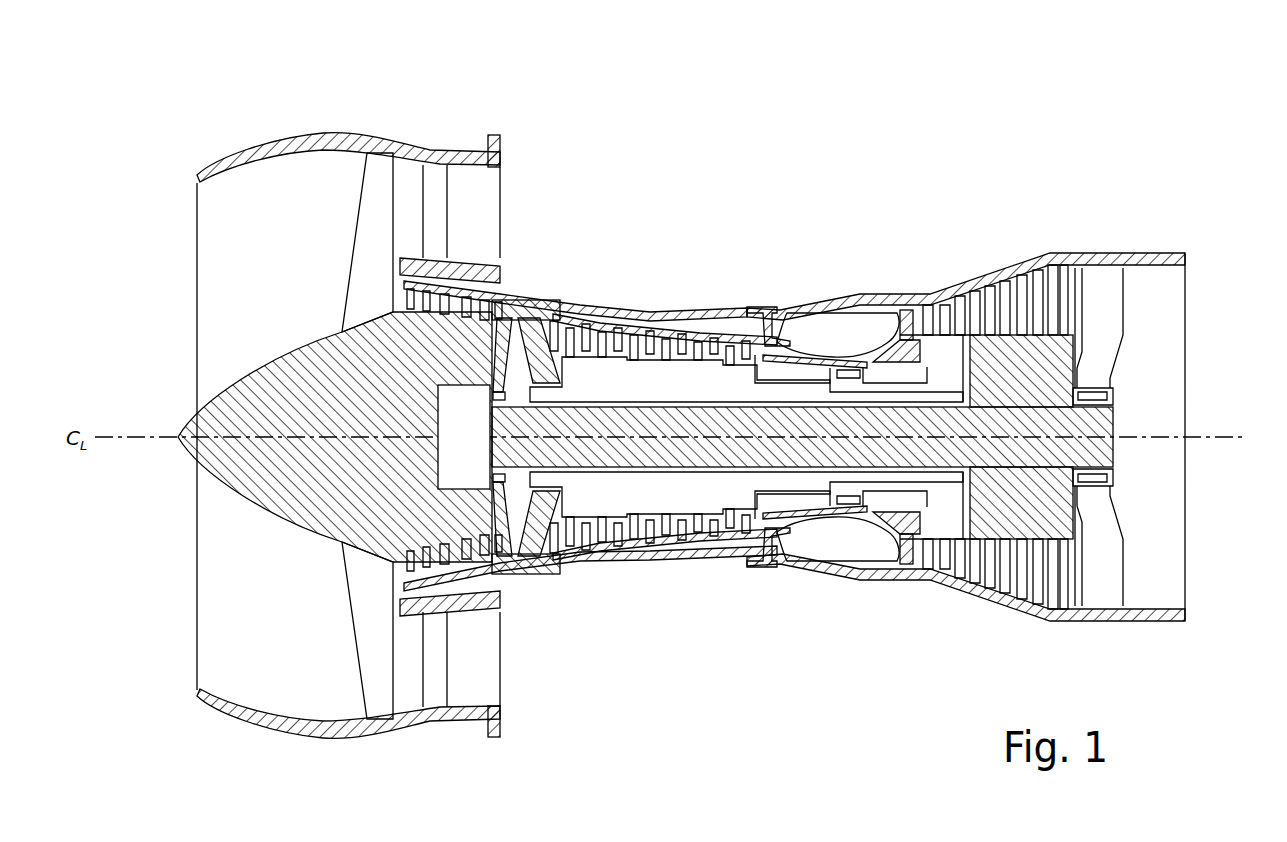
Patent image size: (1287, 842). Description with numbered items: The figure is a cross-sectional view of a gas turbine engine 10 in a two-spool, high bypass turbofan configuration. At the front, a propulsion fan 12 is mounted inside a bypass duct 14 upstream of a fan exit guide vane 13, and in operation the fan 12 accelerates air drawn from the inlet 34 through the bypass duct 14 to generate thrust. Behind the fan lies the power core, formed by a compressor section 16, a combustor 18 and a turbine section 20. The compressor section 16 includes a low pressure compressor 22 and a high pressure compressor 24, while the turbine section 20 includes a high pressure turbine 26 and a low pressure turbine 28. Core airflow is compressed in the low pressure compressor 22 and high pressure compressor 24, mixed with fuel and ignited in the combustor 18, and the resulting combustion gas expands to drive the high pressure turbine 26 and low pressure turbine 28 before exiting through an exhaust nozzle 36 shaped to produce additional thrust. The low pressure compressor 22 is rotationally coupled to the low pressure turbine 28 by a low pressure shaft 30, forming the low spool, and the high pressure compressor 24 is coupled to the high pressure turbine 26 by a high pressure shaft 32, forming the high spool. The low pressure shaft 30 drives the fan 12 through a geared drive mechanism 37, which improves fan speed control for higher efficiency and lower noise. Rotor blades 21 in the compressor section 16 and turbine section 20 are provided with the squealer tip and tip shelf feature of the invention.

The gas turbine engine 10 is at (176, 103).
The propulsion fan 12 is at (368, 255).
The fan exit guide vane 13 is at (437, 172).
The bypass duct 14 is at (478, 210).
The compressor section 16 is at (757, 651).
The combustor 18 is at (845, 333).
The turbine section 20 is at (1030, 670).
The rotor blades 21 is at (748, 350).
The low pressure compressor 22 is at (498, 571).
The high pressure compressor 24 is at (618, 557).
The high pressure turbine 26 is at (935, 577).
The low pressure turbine 28 is at (1010, 600).
The low pressure shaft 30 is at (815, 455).
The high pressure shaft 32 is at (778, 480).
The inlet 34 is at (213, 278).
The exhaust nozzle 36 is at (1168, 337).
The geared drive mechanism 37 is at (475, 423).